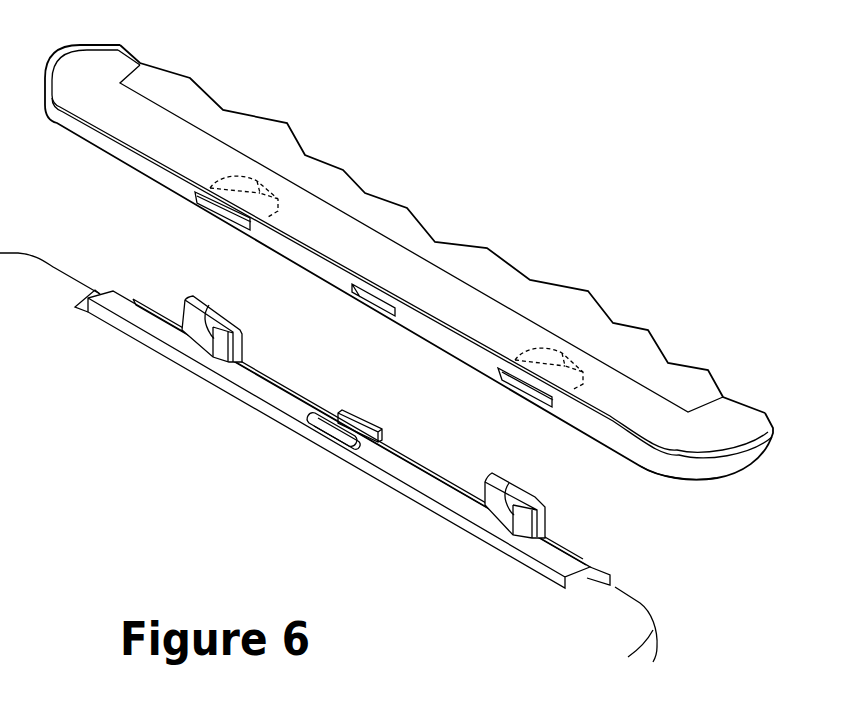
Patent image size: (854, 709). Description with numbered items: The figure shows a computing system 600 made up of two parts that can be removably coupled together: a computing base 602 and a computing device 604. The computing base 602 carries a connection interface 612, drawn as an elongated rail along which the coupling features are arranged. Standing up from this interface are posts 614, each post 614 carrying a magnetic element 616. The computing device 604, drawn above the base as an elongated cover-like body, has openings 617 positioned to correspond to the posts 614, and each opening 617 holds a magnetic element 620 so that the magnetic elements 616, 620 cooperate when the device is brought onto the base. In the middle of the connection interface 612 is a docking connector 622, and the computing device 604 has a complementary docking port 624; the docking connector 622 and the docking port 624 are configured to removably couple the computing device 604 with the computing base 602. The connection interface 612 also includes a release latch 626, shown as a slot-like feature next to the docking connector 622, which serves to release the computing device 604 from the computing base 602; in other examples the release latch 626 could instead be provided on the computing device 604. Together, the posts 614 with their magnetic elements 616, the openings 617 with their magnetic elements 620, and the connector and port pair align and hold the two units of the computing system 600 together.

The computing system 600 is at (409, 262).
The computing base 602 is at (640, 603).
The computing device 604 is at (687, 480).
The connection interface 612 is at (410, 453).
The post 614 is at (243, 340).
The magnetic element 616 is at (209, 305).
The opening 617 is at (217, 218).
The magnetic element 620 is at (275, 187).
The docking connector 622 is at (377, 423).
The docking port 624 is at (370, 303).
The release latch 626 is at (323, 413).